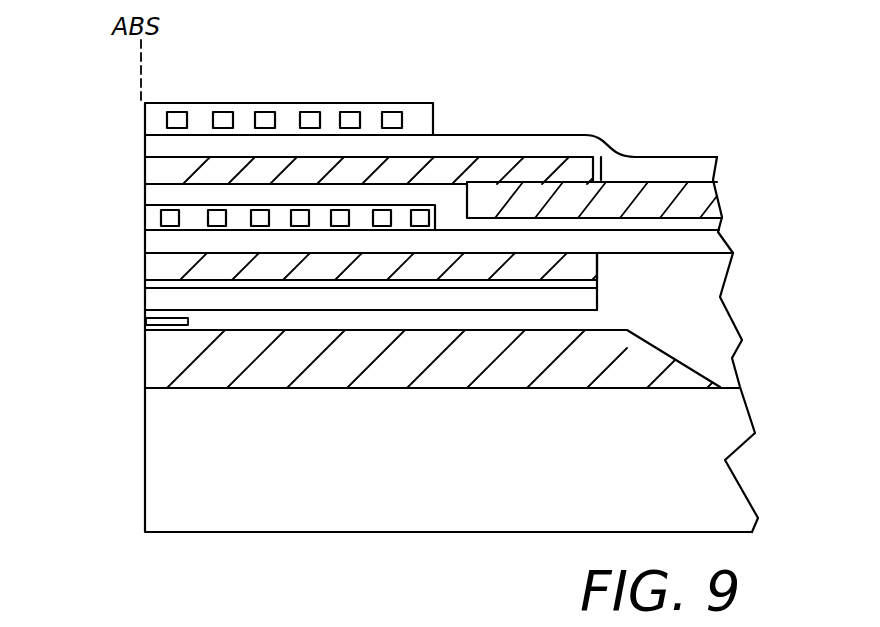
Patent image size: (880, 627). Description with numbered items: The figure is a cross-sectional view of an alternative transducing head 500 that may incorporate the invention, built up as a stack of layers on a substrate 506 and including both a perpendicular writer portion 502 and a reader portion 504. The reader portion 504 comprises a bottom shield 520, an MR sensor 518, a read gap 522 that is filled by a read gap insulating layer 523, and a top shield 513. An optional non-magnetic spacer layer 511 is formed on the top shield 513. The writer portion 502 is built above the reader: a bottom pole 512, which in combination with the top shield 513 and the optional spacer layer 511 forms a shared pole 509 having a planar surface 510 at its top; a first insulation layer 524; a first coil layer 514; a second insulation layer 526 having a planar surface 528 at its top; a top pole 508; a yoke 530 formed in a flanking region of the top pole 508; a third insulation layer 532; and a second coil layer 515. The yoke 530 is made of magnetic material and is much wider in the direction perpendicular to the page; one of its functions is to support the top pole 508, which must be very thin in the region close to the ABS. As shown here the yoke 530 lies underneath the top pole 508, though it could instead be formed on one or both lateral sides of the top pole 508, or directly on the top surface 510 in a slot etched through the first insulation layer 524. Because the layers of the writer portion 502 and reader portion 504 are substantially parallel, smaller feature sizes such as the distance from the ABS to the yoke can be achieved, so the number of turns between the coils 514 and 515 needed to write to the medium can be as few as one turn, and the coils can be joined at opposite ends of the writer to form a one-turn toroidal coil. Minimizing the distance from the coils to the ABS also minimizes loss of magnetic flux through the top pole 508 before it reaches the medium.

The transducing head 500 is at (679, 128).
The perpendicular writer portion 502 is at (777, 103).
The reader portion 504 is at (745, 253).
The substrate 506 is at (153, 435).
The top pole 508 is at (148, 170).
The shared pole 509 is at (68, 257).
The planar surface 510 is at (656, 247).
The spacer layer 511 is at (152, 285).
The bottom pole 512 is at (153, 267).
The top shield 513 is at (147, 302).
The first coil layer 514 is at (148, 222).
The second coil layer 515 is at (147, 118).
The MR sensor 518 is at (147, 323).
The bottom shield 520 is at (153, 365).
The read gap 522 is at (65, 315).
The read gap insulating layer 523 is at (690, 334).
The first insulation layer 524 is at (153, 245).
The second insulation layer 526 is at (153, 193).
The planar surface 528 is at (603, 176).
The yoke 530 is at (542, 203).
The third insulation layer 532 is at (152, 150).